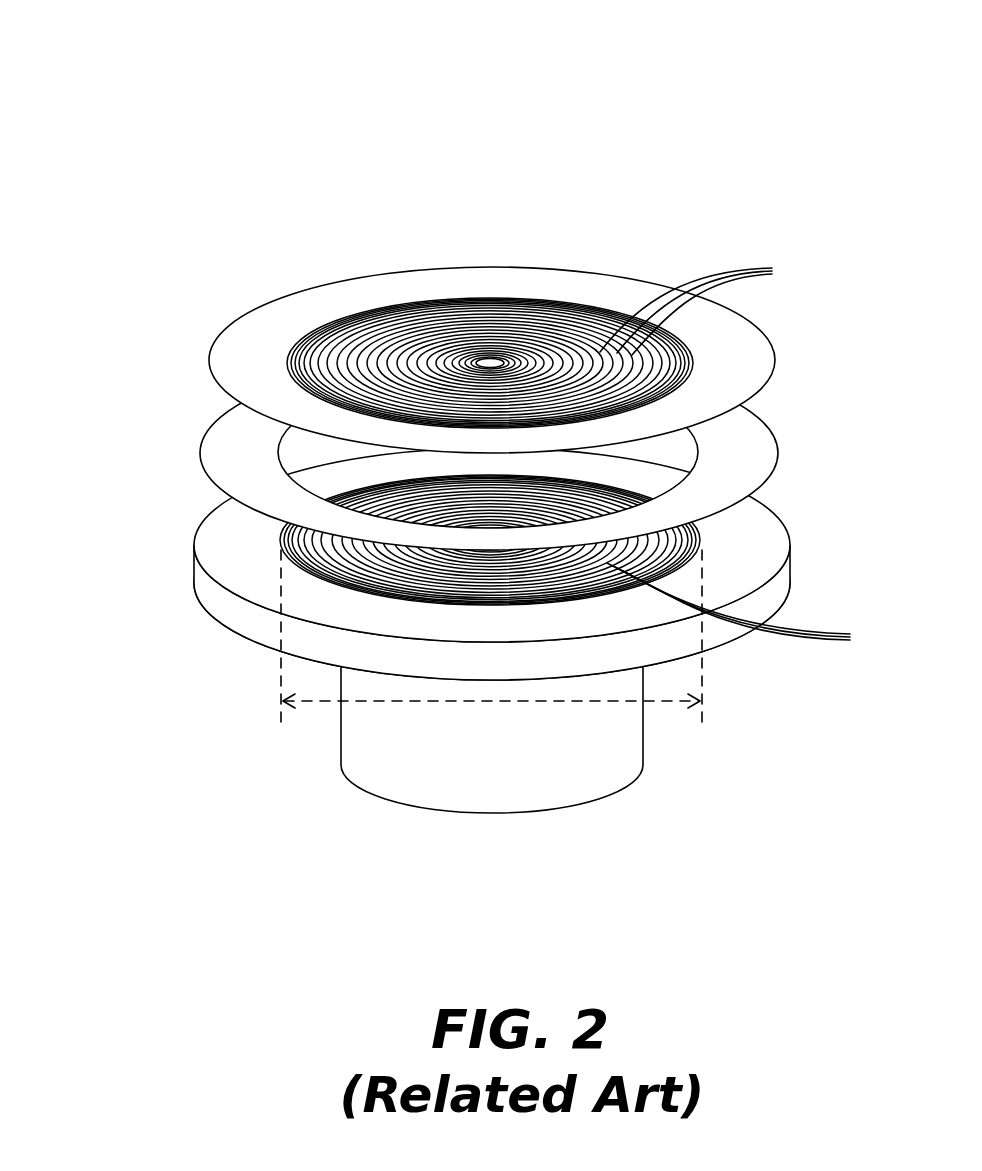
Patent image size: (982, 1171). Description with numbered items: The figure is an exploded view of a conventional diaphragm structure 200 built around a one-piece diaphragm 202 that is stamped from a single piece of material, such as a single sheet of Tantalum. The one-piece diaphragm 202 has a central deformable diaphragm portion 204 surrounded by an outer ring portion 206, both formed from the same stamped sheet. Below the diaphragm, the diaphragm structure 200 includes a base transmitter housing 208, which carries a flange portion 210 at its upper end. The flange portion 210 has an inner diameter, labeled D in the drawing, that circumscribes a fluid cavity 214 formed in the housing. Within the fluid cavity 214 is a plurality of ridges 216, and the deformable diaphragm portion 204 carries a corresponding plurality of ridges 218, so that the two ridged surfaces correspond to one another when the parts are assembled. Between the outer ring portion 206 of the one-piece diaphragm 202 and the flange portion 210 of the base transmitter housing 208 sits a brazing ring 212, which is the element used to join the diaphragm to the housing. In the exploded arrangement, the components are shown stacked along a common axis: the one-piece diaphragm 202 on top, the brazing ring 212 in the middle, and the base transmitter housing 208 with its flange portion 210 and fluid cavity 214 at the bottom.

The diaphragm structure 200 is at (150, 54).
The one-piece diaphragm 202 is at (196, 333).
The deformable diaphragm portion 204 is at (528, 305).
The outer ring portion 206 is at (318, 291).
The base transmitter housing 208 is at (360, 760).
The flange portion 210 is at (217, 543).
The brazing ring 212 is at (208, 460).
The fluid cavity 214 is at (690, 534).
The plurality of ridges 216 is at (758, 610).
The plurality of ridges 218 is at (716, 309).